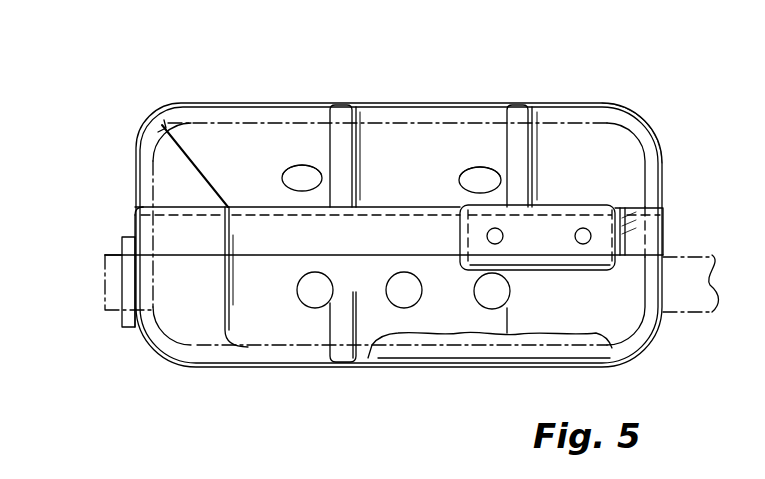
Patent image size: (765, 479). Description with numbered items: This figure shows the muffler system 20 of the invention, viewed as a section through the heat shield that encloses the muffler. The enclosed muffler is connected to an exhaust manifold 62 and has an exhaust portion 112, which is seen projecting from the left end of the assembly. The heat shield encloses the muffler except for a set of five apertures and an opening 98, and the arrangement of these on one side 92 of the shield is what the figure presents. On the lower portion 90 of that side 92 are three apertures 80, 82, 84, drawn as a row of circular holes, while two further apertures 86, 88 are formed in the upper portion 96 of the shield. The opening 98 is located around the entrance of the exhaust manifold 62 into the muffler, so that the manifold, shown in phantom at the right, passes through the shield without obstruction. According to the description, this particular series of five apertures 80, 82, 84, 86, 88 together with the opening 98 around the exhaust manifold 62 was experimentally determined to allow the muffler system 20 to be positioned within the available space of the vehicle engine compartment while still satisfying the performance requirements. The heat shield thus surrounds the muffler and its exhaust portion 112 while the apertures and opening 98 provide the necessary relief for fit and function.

The muffler system 20 is at (413, 86).
The upper portion 96 is at (612, 148).
The side 92 is at (628, 227).
The opening 98 is at (660, 278).
The exhaust manifold 62 is at (697, 313).
The lower portion 90 is at (612, 322).
The aperture 88 is at (294, 163).
The aperture 86 is at (478, 165).
The aperture 80 is at (303, 307).
The aperture 82 is at (389, 276).
The aperture 84 is at (478, 303).
The exhaust portion 112 is at (110, 253).